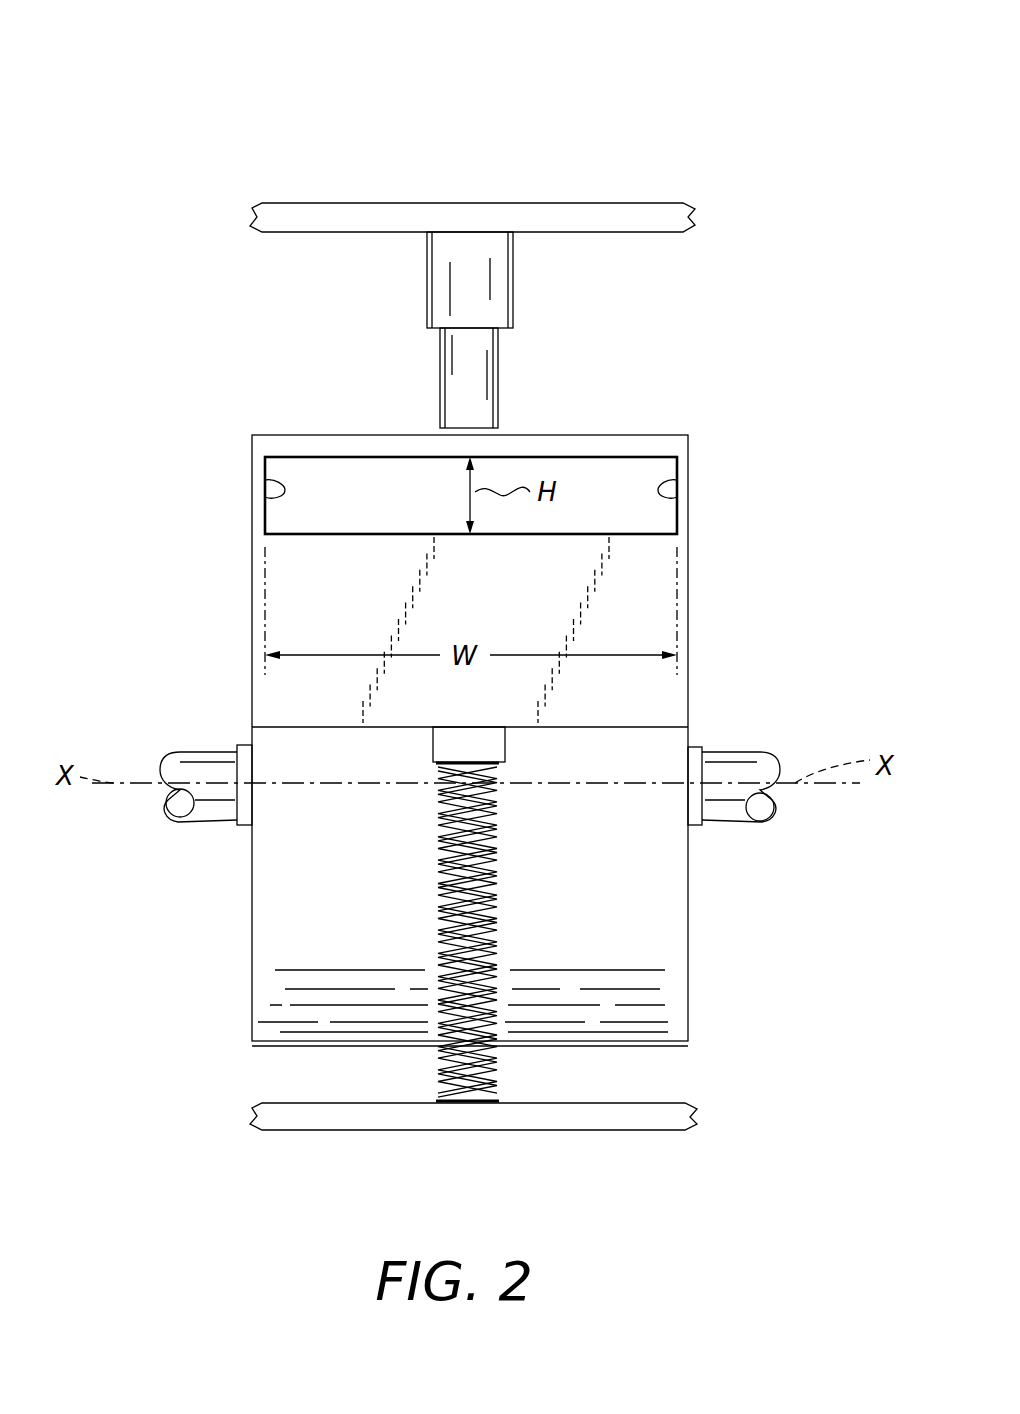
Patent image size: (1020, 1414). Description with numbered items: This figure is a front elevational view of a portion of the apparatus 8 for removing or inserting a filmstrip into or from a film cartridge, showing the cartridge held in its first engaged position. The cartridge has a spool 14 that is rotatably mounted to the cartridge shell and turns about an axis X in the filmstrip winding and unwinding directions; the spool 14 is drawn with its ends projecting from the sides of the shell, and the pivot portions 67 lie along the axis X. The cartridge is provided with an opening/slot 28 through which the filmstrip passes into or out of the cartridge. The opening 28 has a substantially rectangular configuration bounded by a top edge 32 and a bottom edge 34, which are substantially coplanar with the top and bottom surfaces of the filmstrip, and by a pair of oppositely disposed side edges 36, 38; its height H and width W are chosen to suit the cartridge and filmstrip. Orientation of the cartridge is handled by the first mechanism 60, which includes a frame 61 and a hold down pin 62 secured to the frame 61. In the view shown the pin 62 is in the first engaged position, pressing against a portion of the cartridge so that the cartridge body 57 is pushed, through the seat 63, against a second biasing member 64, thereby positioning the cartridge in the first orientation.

The apparatus 8 is at (537, 134).
The frame 61 is at (665, 203).
The hold down pin 62 is at (513, 290).
The cylinder body 57 is at (252, 1005).
The top edge 32 is at (333, 475).
The side edge 36 is at (265, 490).
The side edge 38 is at (677, 490).
The bottom edge 34 is at (392, 534).
The opening/slot 28 is at (593, 522).
The spring seat 63 is at (433, 745).
The second biasing member 64 is at (497, 883).
The spool 14 is at (240, 745).
The pivot pin 67 is at (213, 823).
The first mechanism 60 is at (647, 1130).